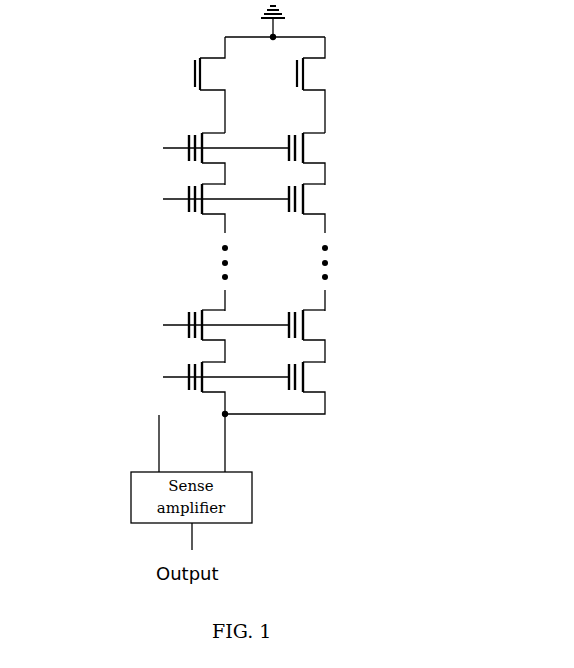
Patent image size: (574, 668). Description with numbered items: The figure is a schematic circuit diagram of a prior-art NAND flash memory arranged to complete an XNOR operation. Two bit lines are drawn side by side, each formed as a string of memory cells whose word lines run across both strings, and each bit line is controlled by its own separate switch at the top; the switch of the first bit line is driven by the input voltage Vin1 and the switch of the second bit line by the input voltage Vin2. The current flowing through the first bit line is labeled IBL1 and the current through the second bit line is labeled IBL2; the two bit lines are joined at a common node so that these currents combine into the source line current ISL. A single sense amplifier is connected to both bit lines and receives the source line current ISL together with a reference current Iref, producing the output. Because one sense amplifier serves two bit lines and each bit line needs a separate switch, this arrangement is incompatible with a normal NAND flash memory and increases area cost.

The first input voltage / first input transistor Vin1 is at (195, 73).
The second input voltage / second input transistor Vin2 is at (297, 73).
The first bit line current IBL1 is at (217, 400).
The second bit line current IBL2 is at (333, 400).
The reference current Iref is at (147, 445).
The source line current ISL is at (233, 448).